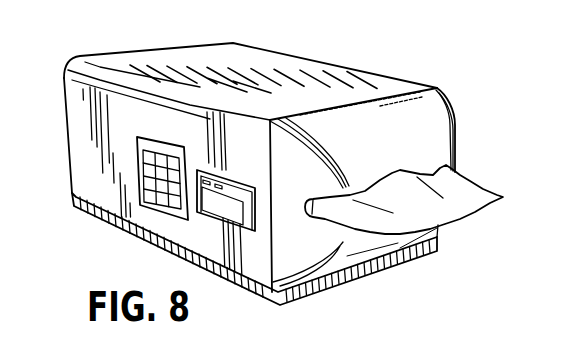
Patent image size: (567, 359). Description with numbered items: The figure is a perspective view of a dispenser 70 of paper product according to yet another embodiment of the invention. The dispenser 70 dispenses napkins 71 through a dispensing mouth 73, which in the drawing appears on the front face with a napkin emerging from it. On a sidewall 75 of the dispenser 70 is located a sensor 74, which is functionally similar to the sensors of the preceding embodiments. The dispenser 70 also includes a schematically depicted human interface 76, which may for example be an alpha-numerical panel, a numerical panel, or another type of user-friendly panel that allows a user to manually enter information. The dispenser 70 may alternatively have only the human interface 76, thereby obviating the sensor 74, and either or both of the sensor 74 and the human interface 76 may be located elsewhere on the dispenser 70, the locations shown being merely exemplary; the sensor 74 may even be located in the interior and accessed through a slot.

The dispenser 70 is at (100, 36).
The napkins 71 is at (470, 193).
The dispensing mouth 73 is at (391, 172).
The sensor 74 is at (210, 217).
The sidewall 75 is at (138, 122).
The human interface 76 is at (148, 205).